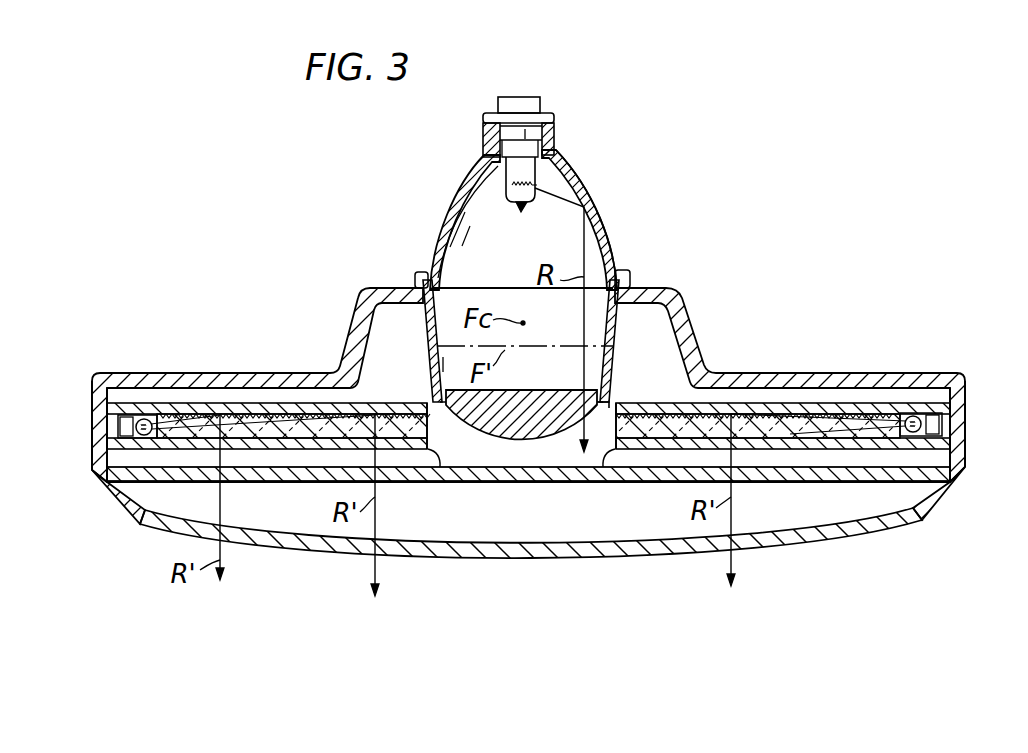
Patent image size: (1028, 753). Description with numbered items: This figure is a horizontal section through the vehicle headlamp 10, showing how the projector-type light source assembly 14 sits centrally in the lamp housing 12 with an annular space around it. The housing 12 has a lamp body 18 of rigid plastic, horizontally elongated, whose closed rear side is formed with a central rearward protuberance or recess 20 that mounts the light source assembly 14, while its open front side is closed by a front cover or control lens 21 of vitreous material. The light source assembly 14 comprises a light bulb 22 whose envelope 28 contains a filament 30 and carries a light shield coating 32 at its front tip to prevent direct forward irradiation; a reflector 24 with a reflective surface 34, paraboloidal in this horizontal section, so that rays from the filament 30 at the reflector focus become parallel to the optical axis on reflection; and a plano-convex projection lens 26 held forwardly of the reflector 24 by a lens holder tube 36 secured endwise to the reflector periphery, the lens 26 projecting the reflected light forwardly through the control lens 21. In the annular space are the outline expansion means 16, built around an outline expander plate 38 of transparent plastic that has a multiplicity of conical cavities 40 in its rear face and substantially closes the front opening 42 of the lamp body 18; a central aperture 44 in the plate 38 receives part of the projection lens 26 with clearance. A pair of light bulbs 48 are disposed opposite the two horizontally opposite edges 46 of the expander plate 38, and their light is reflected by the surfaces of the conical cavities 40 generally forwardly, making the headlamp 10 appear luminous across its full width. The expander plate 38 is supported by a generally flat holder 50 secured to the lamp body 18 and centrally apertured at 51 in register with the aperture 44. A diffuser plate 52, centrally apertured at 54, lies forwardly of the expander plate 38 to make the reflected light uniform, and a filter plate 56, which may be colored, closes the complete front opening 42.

The vehicle headlamp 10 is at (772, 159).
The lamp housing 12 is at (84, 386).
The projector-type light source assembly 14 is at (628, 236).
The outline expansion means 16 is at (122, 467).
The lamp body 18 is at (966, 386).
The rearward protuberance or recess 20 is at (692, 312).
The front cover or control lens 21 is at (830, 524).
The light bulb 22 is at (537, 204).
The reflector 24 is at (598, 187).
The plano-convex projection lens 26 is at (520, 443).
The envelope 28 is at (503, 172).
The filament 30 is at (543, 178).
The light shield coating 32 is at (520, 212).
The reflective surface 34 is at (452, 246).
The lens holder tube 36 is at (620, 348).
The outline expander plate 38 is at (188, 428).
The conical cavities 40 is at (243, 416).
The front opening 42 is at (948, 478).
The central aperture 44 is at (611, 441).
The opposite edges 46 is at (145, 419).
The light bulbs 48 is at (130, 414).
The holder 50 is at (273, 406).
The central aperture of holder 51 is at (427, 406).
The diffuser plate 52 is at (262, 449).
The central aperture of diffuser plate 54 is at (437, 464).
The filter plate 56 is at (470, 482).